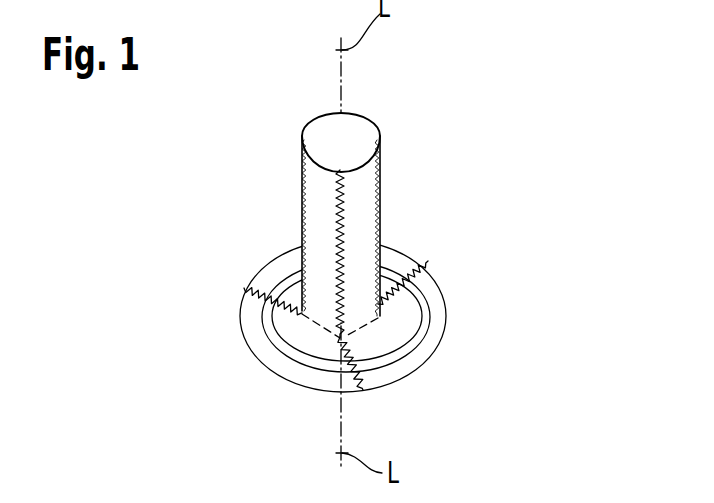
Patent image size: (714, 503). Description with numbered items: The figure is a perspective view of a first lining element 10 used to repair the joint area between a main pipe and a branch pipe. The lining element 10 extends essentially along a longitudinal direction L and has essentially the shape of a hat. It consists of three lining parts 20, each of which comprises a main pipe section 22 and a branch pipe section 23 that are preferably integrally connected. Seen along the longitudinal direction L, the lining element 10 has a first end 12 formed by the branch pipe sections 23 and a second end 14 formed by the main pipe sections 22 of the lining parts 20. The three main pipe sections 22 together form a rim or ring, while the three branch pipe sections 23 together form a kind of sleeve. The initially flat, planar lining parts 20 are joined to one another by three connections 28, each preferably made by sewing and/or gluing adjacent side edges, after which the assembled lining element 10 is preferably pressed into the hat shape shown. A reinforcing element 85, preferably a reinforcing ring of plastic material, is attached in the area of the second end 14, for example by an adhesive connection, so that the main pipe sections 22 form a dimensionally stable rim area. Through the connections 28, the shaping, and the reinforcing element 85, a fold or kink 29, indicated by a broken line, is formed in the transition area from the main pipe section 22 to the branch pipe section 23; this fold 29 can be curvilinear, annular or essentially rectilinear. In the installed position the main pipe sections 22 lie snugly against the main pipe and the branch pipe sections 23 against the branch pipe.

The first lining element 10 is at (523, 192).
The first end 12 is at (395, 131).
The second end 14 is at (455, 293).
The lining part 20 is at (265, 260).
The main pipe section 22 is at (293, 250).
The branch pipe section 23 is at (362, 123).
The connection 28 is at (247, 285).
The fold or kink 29 is at (312, 322).
The reinforcing element 85 is at (398, 347).